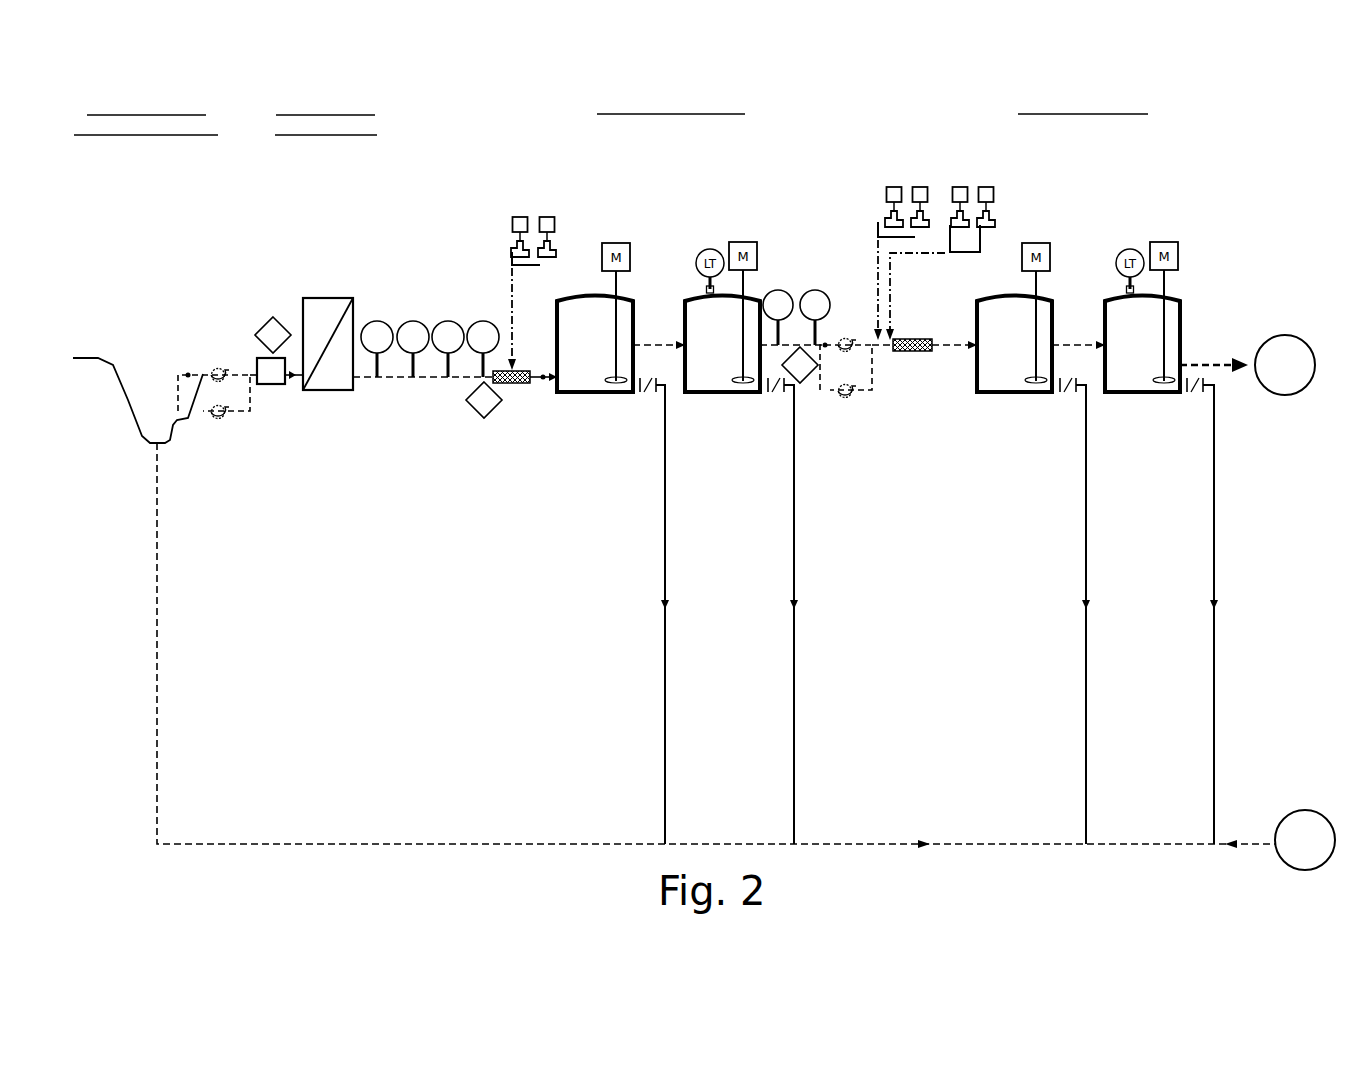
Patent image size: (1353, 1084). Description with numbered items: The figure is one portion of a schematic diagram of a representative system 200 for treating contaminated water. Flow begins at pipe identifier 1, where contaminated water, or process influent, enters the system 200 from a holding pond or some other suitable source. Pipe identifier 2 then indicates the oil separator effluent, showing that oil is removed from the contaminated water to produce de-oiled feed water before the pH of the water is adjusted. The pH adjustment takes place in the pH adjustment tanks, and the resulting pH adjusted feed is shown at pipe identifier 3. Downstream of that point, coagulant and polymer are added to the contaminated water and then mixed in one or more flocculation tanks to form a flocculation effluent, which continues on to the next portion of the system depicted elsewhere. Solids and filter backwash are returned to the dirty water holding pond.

The system 200 is at (177, 268).
The pipe identifier 1 is at (273, 335).
The pipe identifier 2 is at (484, 400).
The pipe identifier 3 is at (800, 365).